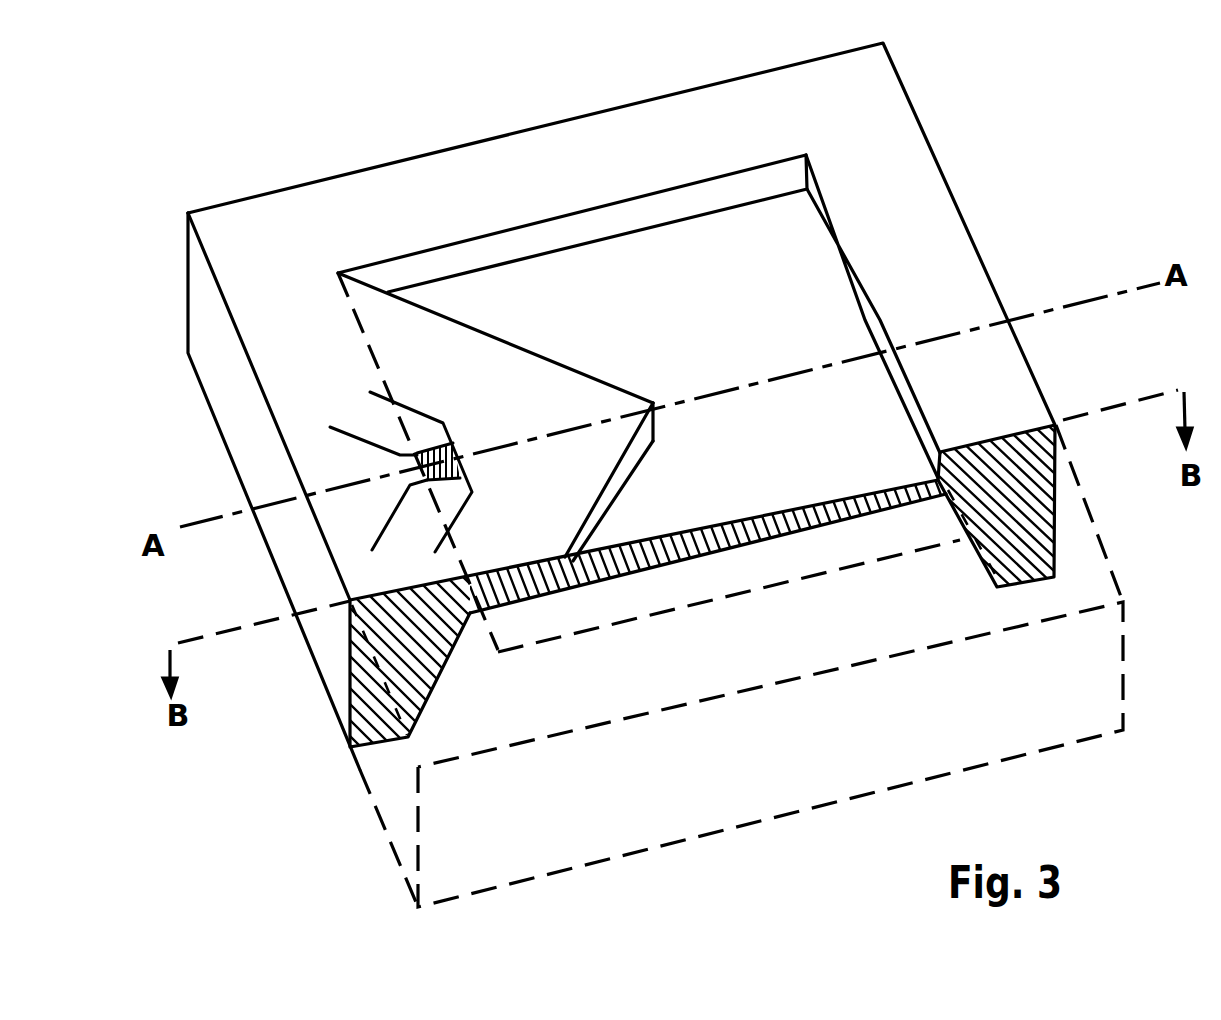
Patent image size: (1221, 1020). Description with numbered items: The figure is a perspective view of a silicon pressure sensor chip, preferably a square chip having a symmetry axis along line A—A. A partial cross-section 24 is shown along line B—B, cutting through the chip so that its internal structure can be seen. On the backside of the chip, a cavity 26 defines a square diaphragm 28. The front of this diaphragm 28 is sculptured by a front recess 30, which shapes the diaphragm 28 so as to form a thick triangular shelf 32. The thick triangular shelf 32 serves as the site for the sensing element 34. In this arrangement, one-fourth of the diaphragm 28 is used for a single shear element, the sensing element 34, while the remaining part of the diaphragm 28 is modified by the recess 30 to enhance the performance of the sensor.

The partial cross-section 24 is at (1017, 497).
The cavity 26 is at (873, 563).
The square diaphragm 28 is at (883, 497).
The front recess 30 is at (840, 437).
The thick triangular shelf 32 is at (503, 378).
The sensing element 34 is at (413, 458).